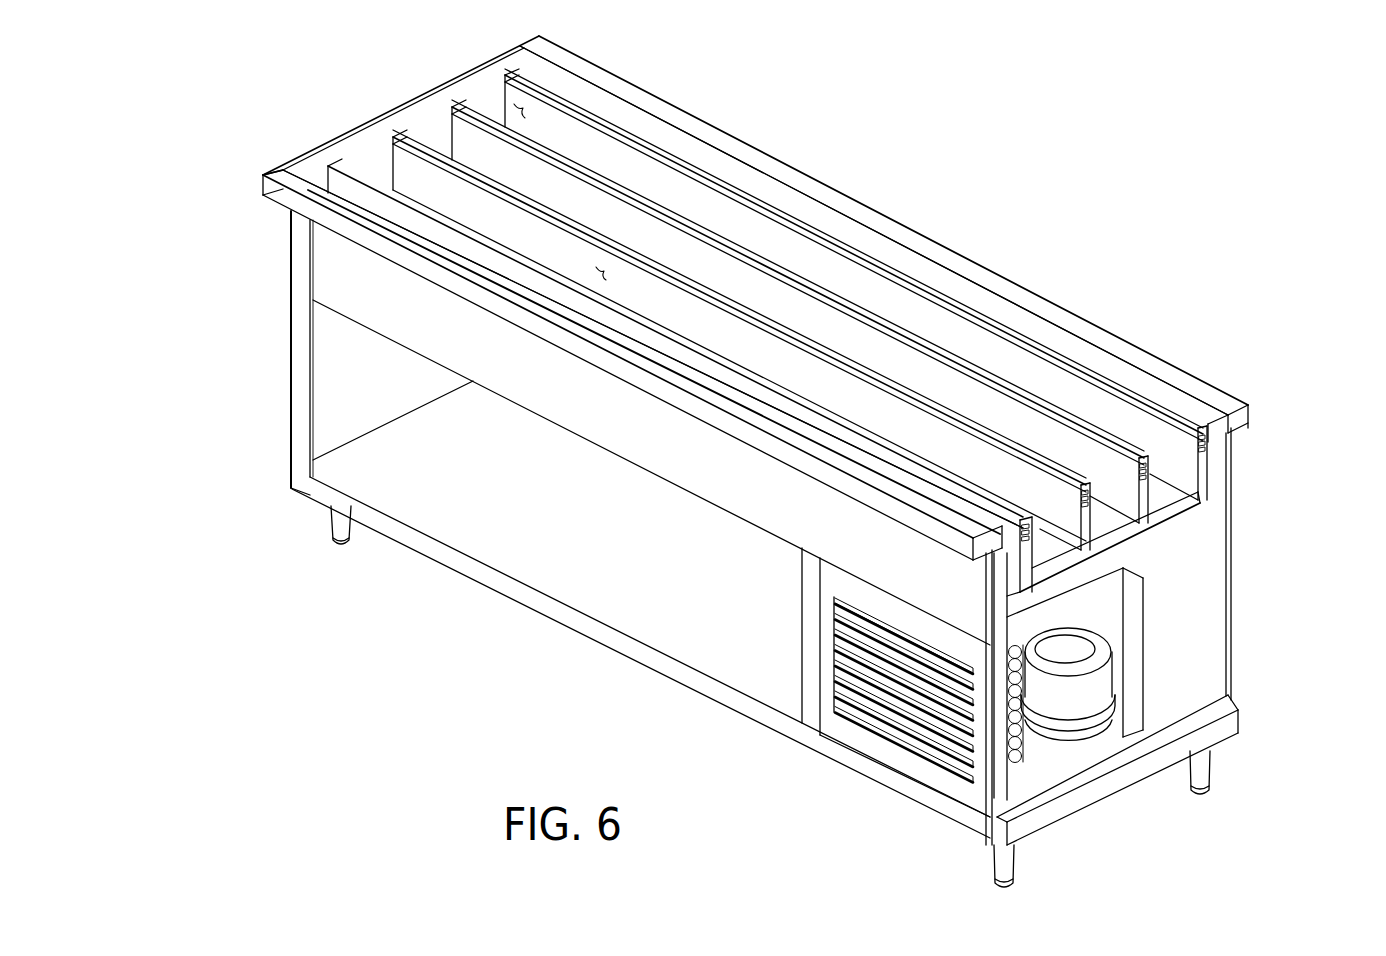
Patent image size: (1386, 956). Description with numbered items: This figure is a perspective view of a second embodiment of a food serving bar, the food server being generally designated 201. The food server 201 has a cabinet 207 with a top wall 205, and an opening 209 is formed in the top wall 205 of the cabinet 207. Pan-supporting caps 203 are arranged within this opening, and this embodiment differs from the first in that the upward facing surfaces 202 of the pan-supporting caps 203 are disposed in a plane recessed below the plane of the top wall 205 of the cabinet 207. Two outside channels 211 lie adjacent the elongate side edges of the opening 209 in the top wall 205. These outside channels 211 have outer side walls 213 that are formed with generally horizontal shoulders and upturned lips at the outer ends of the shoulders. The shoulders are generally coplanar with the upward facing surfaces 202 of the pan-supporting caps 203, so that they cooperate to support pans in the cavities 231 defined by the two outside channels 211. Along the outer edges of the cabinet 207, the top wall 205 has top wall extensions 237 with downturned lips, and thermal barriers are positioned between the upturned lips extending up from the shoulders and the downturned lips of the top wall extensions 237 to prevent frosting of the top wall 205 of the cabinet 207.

The food server 201 is at (997, 237).
The upward facing surfaces 202 is at (410, 133).
The pan-supporting caps 203 is at (770, 258).
The top wall 205 is at (1228, 397).
The cabinet 207 is at (1232, 625).
The opening 209 is at (327, 173).
The outside channels 211 is at (1197, 493).
The outer side walls 213 is at (1200, 480).
The cavities 231 is at (518, 108).
The top wall extensions 237 is at (322, 173).